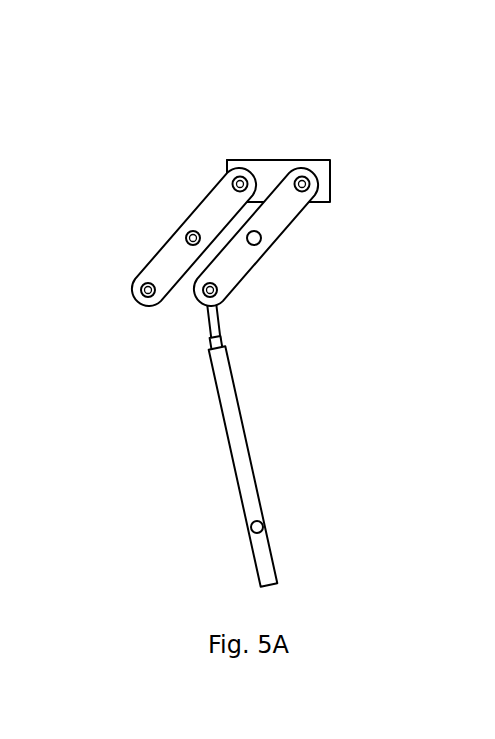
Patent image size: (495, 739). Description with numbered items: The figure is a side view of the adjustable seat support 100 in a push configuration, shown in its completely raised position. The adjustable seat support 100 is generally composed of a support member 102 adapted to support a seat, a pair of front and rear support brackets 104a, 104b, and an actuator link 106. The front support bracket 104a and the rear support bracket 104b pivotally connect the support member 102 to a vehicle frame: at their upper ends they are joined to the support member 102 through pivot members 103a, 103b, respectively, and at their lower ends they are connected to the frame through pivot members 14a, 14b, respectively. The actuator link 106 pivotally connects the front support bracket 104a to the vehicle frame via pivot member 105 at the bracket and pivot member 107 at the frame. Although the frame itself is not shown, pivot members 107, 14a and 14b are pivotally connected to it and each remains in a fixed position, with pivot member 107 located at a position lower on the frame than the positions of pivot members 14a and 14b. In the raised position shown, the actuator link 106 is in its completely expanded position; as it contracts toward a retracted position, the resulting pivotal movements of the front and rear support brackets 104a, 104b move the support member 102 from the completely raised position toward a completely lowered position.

The adjustable seat support 100 is at (287, 130).
The support member 102 is at (323, 177).
The pivot member 103a is at (240, 169).
The pivot member 103b is at (307, 187).
The front support bracket 104a is at (170, 263).
The rear support bracket 104b is at (275, 218).
The pivot member 105 is at (191, 224).
The pivot member 14a is at (141, 292).
The pivot member 14b is at (214, 297).
The actuator link 106 is at (238, 421).
The pivot member 107 is at (261, 521).